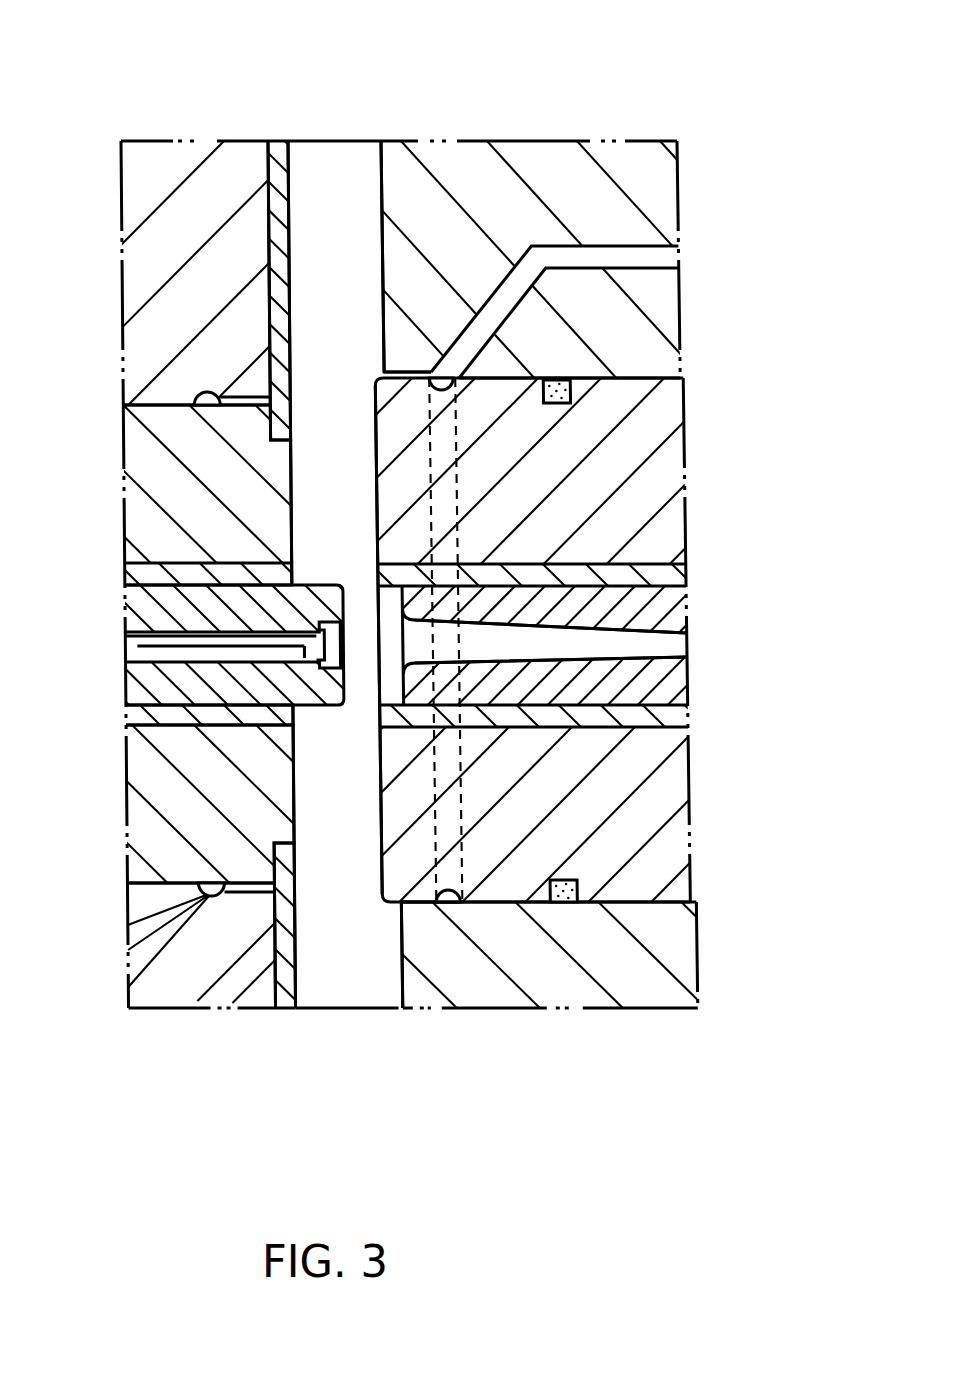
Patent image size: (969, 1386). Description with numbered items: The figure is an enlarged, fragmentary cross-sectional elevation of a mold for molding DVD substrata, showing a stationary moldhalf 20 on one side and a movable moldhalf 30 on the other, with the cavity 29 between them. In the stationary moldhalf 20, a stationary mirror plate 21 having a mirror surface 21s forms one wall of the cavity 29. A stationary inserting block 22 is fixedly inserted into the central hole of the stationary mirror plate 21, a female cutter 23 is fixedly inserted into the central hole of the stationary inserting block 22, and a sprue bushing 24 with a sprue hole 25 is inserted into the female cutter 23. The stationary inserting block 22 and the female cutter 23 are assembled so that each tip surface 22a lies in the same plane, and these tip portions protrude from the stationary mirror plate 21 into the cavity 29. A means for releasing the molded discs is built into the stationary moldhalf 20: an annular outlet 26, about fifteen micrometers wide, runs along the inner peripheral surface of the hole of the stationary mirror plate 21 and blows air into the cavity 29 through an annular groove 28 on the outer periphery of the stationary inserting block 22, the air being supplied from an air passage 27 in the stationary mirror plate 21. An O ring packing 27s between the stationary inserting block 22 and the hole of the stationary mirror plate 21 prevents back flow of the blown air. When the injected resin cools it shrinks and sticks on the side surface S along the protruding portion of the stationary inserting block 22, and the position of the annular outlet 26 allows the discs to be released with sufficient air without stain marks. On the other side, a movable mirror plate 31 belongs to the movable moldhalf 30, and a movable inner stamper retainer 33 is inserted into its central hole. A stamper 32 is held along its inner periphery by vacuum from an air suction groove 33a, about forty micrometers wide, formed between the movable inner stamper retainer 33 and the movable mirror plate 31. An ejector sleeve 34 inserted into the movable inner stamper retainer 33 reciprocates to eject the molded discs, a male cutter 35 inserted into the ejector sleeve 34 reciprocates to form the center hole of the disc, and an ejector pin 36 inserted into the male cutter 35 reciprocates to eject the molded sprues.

The stationary moldhalf 20 is at (635, 142).
The stationary mirror plate 21 is at (450, 210).
The mirror surface 21s is at (372, 145).
The stationary inserting block 22 is at (650, 523).
The tip surface 22a is at (372, 497).
The female cutter 23 is at (658, 578).
The sprue bushing 24 is at (567, 690).
The sprue hole 25 is at (635, 643).
The annular outlet 26 is at (400, 370).
The air passage 27 is at (533, 283).
The O ring packing 27s is at (568, 403).
The annular groove 28 is at (448, 393).
The cavity 29 is at (358, 790).
The side surface S is at (390, 902).
The movable moldhalf 30 is at (158, 140).
The movable mirror plate 31 is at (188, 209).
The stamper 32 is at (278, 140).
The movable inner stamper retainer 33 is at (147, 538).
The air suction groove 33a is at (247, 893).
The ejector sleeve 34 is at (150, 578).
The male cutter 35 is at (140, 608).
The ejector pin 36 is at (133, 657).